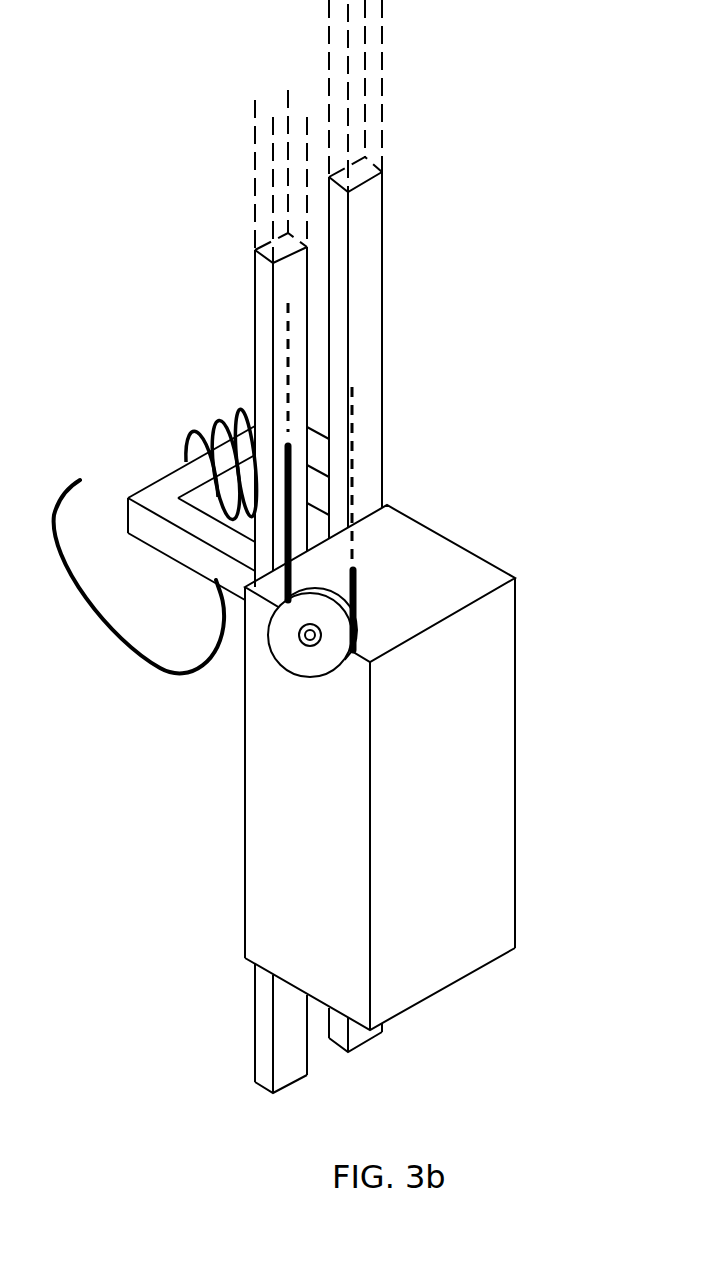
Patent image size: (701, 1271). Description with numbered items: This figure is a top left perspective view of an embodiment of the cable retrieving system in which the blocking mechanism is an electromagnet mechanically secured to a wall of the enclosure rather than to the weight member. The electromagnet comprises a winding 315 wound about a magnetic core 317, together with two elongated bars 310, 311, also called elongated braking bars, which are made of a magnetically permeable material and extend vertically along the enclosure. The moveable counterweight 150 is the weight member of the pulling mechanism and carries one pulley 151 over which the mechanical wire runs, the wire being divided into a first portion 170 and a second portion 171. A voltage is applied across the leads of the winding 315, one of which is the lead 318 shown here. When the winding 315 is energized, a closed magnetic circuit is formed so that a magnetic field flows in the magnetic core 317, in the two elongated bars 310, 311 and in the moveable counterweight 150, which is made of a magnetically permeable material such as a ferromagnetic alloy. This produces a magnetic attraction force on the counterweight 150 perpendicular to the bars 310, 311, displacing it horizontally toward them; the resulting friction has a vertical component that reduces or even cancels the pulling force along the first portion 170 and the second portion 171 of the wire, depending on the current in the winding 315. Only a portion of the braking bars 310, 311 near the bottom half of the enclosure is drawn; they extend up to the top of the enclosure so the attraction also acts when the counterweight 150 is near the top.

The moveable counterweight 150 is at (503, 778).
The pulley 151 is at (312, 665).
The first portion of the mechanical wire 170 is at (297, 578).
The second portion of the mechanical wire 171 is at (358, 604).
The elongated bar 310 is at (265, 290).
The elongated bar 311 is at (375, 240).
The winding 315 is at (232, 417).
The magnetic core 317 is at (153, 490).
The lead 318 is at (72, 480).